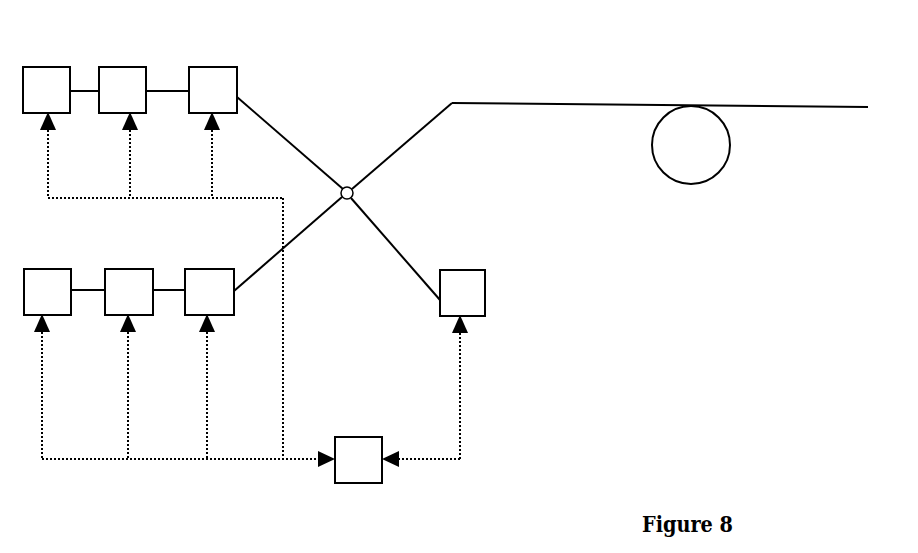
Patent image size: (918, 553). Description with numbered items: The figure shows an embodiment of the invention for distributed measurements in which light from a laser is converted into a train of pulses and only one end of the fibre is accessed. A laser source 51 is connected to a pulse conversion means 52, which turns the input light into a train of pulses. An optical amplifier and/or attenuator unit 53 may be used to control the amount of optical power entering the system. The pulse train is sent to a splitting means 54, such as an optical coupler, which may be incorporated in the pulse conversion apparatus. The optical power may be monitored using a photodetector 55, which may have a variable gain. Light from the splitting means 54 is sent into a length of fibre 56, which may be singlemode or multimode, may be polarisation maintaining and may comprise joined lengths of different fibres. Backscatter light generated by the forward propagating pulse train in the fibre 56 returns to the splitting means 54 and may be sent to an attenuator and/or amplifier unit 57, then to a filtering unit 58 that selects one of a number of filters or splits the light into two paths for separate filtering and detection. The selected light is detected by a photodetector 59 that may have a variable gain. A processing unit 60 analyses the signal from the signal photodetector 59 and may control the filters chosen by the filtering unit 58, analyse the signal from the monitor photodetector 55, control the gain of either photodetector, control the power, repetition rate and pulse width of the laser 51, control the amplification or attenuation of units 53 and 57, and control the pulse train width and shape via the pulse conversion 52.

The laser source 51 is at (52, 82).
The pulse conversion means 52 is at (211, 89).
The optical amplifier and/or attenuator unit 53 is at (123, 85).
The splitting means 54 is at (353, 191).
The photodetector 55 is at (475, 303).
The length of fibre 56 is at (708, 149).
The attenuator and/or amplifier unit 57 is at (203, 286).
The filtering unit 58 is at (122, 283).
The photodetector 59 is at (52, 299).
The processing unit 60 is at (363, 452).